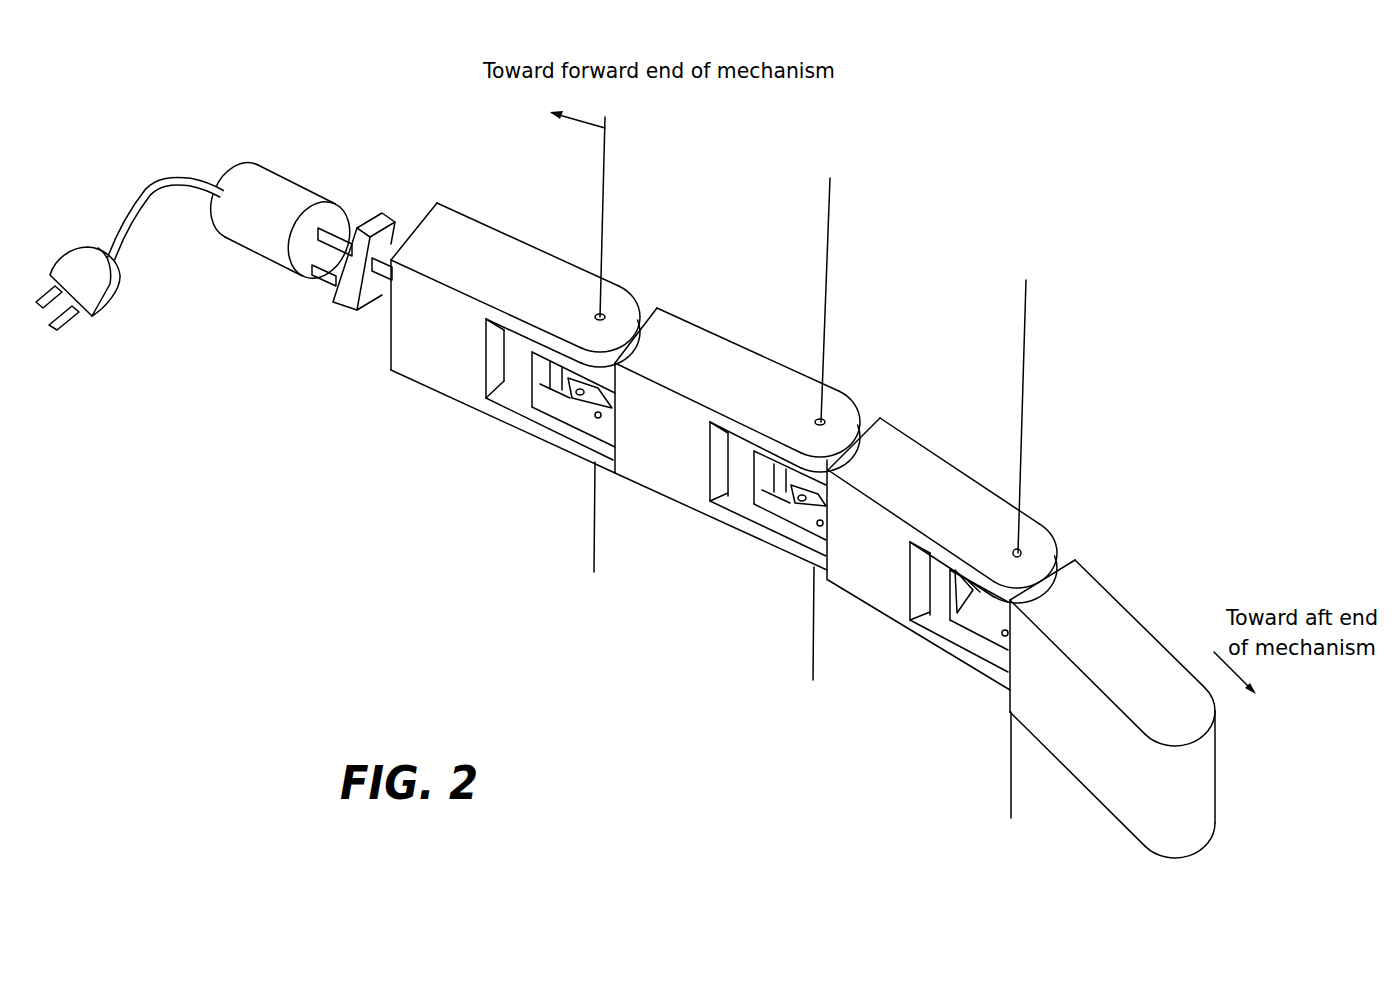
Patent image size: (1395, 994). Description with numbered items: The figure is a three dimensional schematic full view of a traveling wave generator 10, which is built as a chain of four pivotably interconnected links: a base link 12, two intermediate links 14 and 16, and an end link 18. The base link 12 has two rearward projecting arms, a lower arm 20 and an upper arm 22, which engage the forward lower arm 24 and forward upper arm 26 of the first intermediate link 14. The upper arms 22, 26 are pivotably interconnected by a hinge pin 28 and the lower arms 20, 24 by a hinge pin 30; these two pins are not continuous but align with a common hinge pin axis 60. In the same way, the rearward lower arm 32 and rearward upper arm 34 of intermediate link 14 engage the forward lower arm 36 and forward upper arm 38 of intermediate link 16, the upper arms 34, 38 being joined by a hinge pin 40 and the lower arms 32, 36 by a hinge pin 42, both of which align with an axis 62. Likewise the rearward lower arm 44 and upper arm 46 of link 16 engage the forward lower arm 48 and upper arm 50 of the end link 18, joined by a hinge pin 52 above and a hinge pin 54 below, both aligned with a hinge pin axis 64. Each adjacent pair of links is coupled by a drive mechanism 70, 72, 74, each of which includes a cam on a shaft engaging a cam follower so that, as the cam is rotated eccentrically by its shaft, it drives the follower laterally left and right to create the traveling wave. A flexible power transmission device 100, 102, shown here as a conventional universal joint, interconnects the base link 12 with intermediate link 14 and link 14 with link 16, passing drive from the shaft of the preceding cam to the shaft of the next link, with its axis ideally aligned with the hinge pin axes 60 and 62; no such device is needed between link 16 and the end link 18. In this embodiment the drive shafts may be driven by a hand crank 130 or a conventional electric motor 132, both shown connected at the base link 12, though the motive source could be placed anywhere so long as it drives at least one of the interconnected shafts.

The traveling wave generator 10 is at (1008, 146).
The base link 12 is at (512, 230).
The intermediate link 14 is at (697, 318).
The intermediate link 16 is at (922, 440).
The end link 18 is at (1143, 612).
The lower arm 20 is at (528, 427).
The upper arm 22 is at (550, 340).
The forward lower arm 24 is at (597, 414).
The forward upper arm 26 is at (588, 376).
The hinge pin 28 is at (598, 315).
The hinge pin 30 is at (548, 411).
The rearward lower arm 32 is at (757, 532).
The rearward upper arm 34 is at (846, 407).
The forward lower arm 36 is at (819, 525).
The forward upper arm 38 is at (805, 473).
The hinge pin 40 is at (818, 420).
The hinge pin 42 is at (790, 542).
The rearward lower arm 44 is at (917, 640).
The upper arm 46 is at (1058, 553).
The forward lower arm 48 is at (977, 657).
The upper arm 50 is at (993, 605).
The hinge pin 52 is at (1020, 551).
The hinge pin 54 is at (1003, 630).
The hinge pin axis 60 is at (607, 140).
The axis 62 is at (829, 222).
The hinge pin axis 64 is at (1027, 310).
The drive mechanism 70 is at (480, 430).
The drive mechanism 72 is at (703, 530).
The drive mechanism 74 is at (860, 640).
The flexible power transmission device 100 is at (503, 440).
The flexible power transmission device 102 is at (727, 537).
The hand crank 130 is at (384, 212).
The electric motor 132 is at (270, 178).